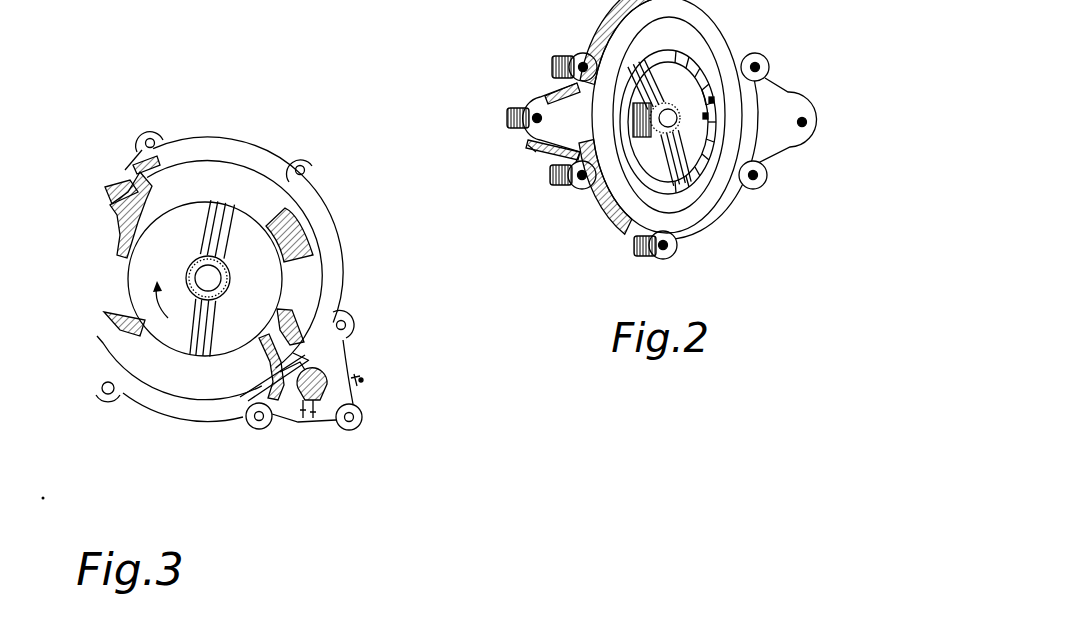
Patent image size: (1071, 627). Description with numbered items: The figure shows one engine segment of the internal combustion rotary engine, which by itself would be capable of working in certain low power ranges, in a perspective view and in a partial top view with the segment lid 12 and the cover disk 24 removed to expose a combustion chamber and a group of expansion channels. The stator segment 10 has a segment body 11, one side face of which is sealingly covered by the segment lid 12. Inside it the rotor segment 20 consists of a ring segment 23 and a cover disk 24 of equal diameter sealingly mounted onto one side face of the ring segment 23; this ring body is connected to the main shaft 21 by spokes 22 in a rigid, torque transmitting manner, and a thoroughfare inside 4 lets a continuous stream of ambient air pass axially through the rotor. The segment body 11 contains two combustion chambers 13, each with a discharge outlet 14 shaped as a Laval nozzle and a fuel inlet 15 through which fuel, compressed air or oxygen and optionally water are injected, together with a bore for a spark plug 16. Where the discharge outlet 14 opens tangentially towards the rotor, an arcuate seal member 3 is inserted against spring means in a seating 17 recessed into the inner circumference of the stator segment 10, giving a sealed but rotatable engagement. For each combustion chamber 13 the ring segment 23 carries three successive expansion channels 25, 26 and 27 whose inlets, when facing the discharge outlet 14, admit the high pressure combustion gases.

In FIG. 3, the arcuate seal member 3 is at (137, 182).
In FIG. 3, the thoroughfare inside 4 is at (254, 292).
In FIG. 2, the thoroughfare inside 4 is at (645, 168).
In FIG. 3, the stator segment 10 is at (323, 187).
In FIG. 2, the stator segment 10 is at (698, 228).
In FIG. 3, the segment body 11 is at (210, 150).
In FIG. 2, the segment body 11 is at (583, 197).
In FIG. 2, the segment lid 12 is at (607, 210).
In FIG. 3, the combustion chamber 13 is at (330, 384).
In FIG. 3, the discharge outlet 14 is at (303, 423).
In FIG. 3, the fuel inlet 15 is at (291, 372).
In FIG. 2, the fuel inlet 15 is at (540, 92).
In FIG. 3, the spark plug 16 is at (358, 378).
In FIG. 2, the spark plug 16 is at (532, 148).
In FIG. 3, the seating 17 is at (146, 165).
In FIG. 3, the rotor segment 20 is at (252, 187).
In FIG. 2, the rotor segment 20 is at (677, 200).
In FIG. 3, the main shaft 21 is at (212, 277).
In FIG. 3, the spoke 22 is at (212, 242).
In FIG. 2, the spoke 22 is at (665, 157).
In FIG. 3, the ring segment 23 is at (238, 180).
In FIG. 2, the ring segment 23 is at (697, 72).
In FIG. 2, the cover disk 24 is at (702, 94).
In FIG. 3, the expansion channel 25 is at (130, 187).
In FIG. 2, the expansion channel 25 is at (706, 117).
In FIG. 3, the expansion channel 26 is at (110, 229).
In FIG. 2, the expansion channel 26 is at (713, 100).
In FIG. 3, the expansion channel 27 is at (118, 320).